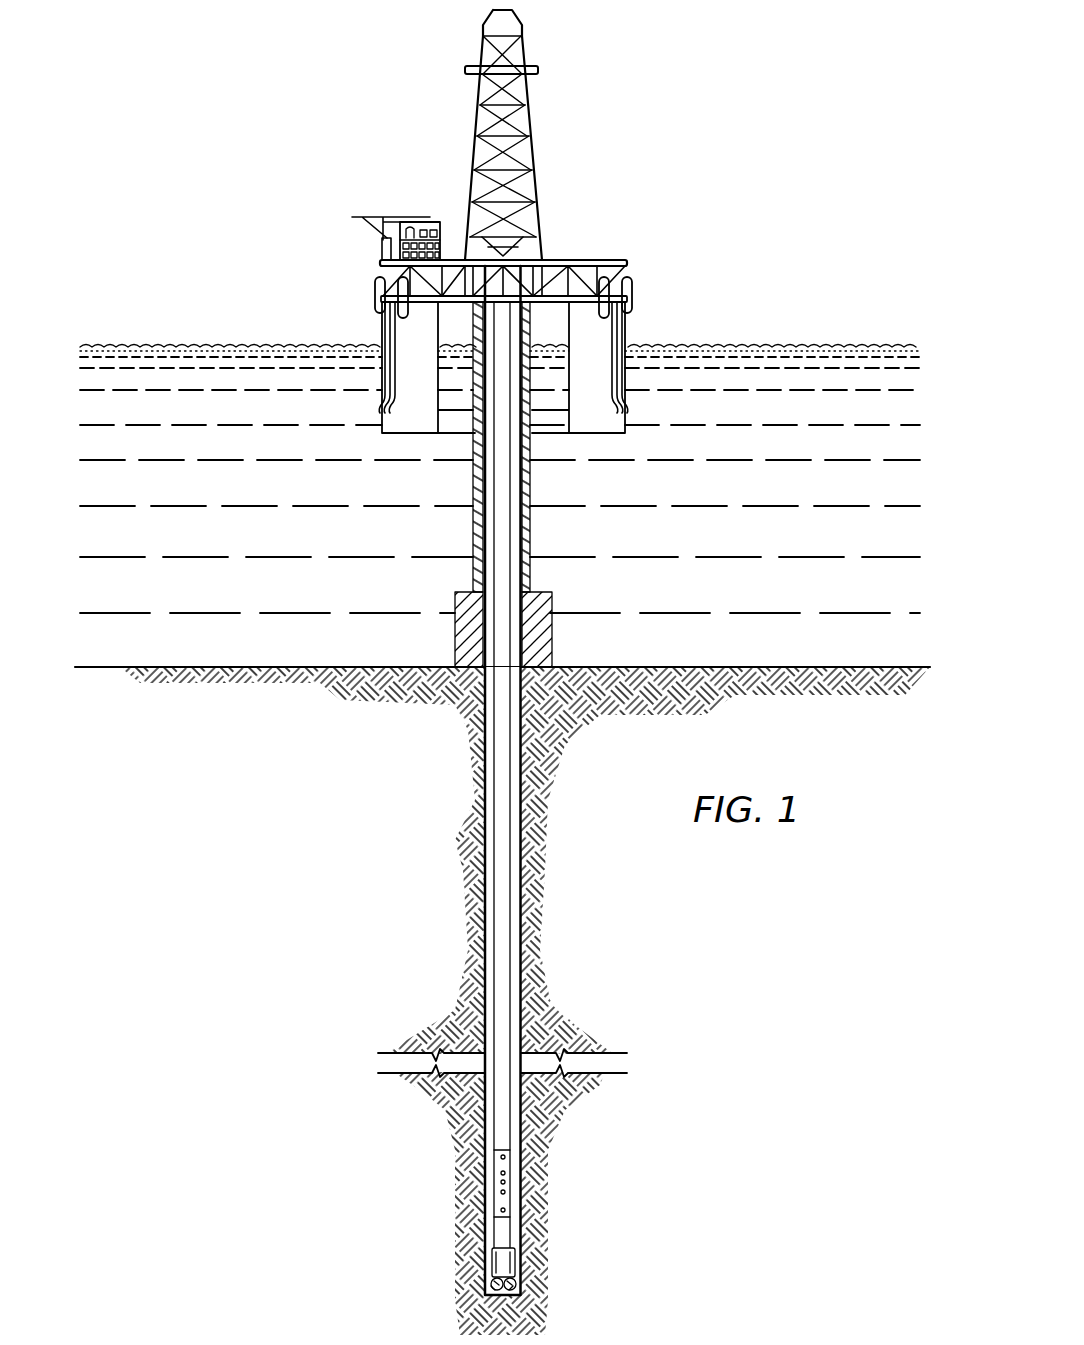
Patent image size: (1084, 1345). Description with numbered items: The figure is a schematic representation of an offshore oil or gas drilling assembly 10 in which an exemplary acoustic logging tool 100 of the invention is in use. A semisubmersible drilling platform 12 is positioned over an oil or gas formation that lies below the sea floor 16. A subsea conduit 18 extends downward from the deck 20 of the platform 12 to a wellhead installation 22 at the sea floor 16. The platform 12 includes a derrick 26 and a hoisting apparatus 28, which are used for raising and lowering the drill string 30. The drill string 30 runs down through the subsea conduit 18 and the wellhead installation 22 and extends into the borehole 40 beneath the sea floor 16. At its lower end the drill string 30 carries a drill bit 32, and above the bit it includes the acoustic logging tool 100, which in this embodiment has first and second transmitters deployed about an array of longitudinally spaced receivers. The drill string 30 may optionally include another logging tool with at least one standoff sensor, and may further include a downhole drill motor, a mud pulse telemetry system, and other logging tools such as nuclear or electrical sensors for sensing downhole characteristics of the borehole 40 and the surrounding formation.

The offshore oil or gas drilling assembly 10 is at (614, 138).
The semisubmersible drilling platform 12 is at (612, 262).
The sea floor 16 is at (795, 667).
The subsea conduit 18 is at (530, 530).
The deck 20 is at (620, 298).
The wellhead installation 22 is at (549, 590).
The derrick 26 is at (505, 238).
The hoisting apparatus 28 is at (527, 54).
The drill string 30 is at (503, 446).
The drill bit 32 is at (514, 1283).
The borehole 40 is at (483, 948).
The acoustic logging tool 100 is at (506, 1158).